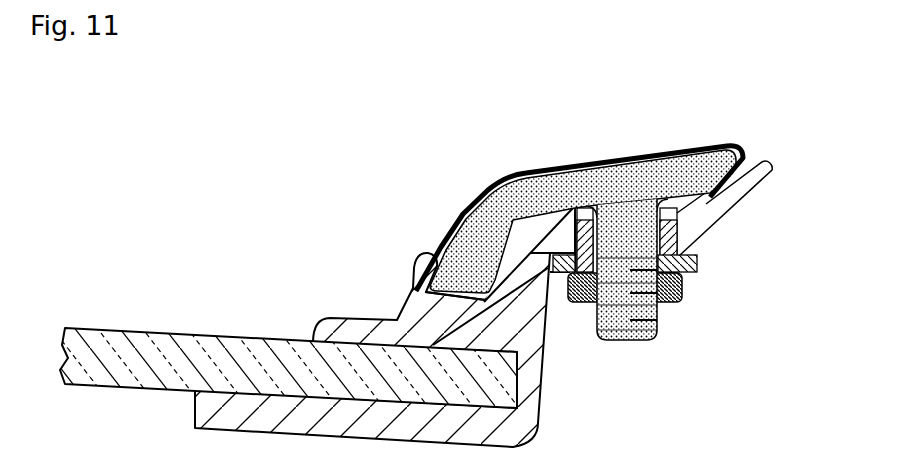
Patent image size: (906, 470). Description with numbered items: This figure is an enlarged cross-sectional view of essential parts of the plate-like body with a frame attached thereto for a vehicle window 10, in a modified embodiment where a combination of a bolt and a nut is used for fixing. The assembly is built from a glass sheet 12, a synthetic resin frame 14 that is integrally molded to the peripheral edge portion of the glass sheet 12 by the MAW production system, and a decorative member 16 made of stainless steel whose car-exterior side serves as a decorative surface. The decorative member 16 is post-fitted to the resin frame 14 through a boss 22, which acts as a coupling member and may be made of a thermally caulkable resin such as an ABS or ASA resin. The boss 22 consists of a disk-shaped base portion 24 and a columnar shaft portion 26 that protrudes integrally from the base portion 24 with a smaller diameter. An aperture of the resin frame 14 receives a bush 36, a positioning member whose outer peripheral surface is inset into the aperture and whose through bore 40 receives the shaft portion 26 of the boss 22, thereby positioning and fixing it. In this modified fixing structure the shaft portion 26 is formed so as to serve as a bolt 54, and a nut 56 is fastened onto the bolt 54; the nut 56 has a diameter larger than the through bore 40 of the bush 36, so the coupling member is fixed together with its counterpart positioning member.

The plate-like body with a frame attached thereto for a vehicle window 10 is at (334, 241).
The glass sheet 12 is at (165, 336).
The synthetic resin frame 14 is at (419, 311).
The decorative member 16 is at (579, 239).
The boss 22 is at (542, 194).
The base portion 24 is at (685, 165).
The shaft portion 26 is at (623, 223).
The bush 36 is at (678, 231).
The through bore 40 is at (600, 215).
The bolt 54 is at (630, 302).
The nut 56 is at (683, 288).